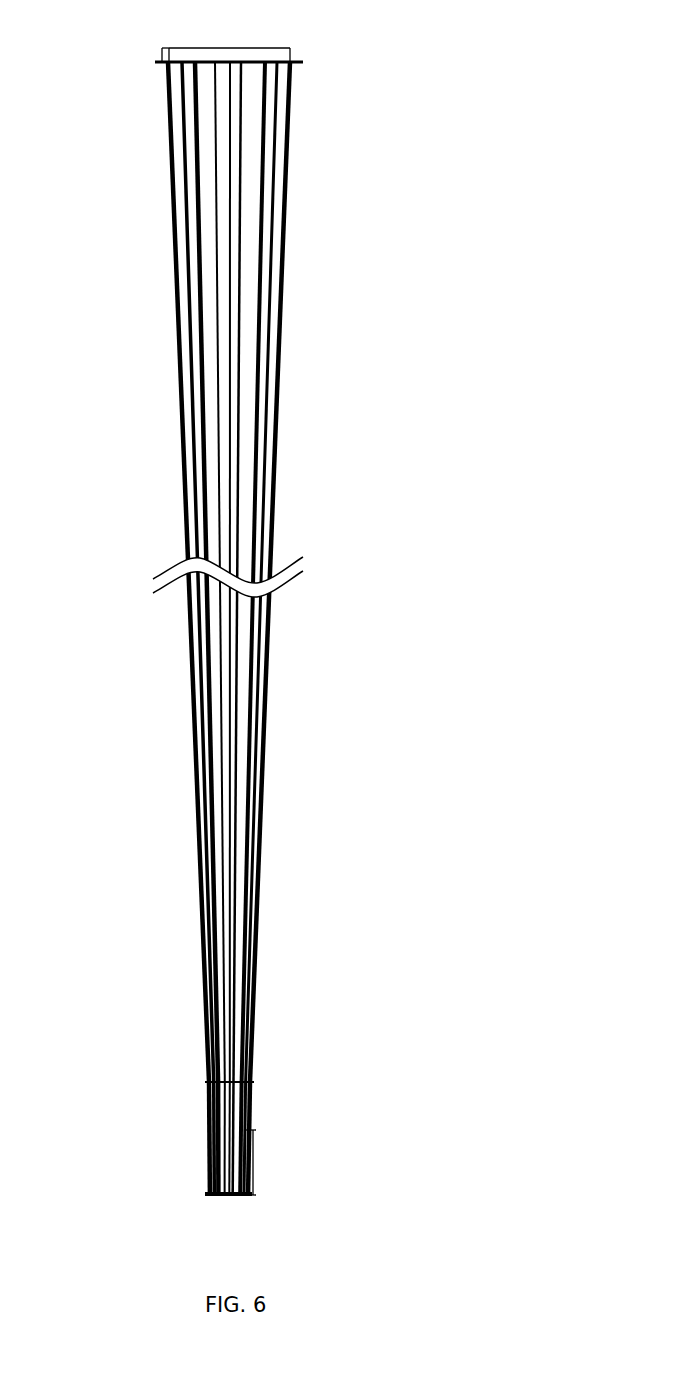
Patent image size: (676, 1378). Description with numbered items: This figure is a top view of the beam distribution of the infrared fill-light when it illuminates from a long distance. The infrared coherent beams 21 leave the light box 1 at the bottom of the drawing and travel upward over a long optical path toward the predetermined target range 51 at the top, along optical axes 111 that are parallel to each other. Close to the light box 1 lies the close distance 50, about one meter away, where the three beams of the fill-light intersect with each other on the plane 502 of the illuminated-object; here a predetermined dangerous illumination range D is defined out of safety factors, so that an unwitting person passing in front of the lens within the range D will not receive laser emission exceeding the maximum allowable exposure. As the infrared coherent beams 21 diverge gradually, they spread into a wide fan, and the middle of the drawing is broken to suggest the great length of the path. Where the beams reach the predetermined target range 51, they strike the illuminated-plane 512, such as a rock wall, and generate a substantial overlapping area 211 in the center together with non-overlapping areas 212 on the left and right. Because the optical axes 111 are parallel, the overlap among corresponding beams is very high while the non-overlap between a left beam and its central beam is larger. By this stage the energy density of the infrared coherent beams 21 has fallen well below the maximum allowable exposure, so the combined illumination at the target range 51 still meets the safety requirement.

The light box 1 is at (200, 1193).
The infrared coherent beam 21 is at (283, 298).
The close distance 50 is at (260, 1024).
The predetermined target range 51 is at (308, 598).
The optical axis 111 is at (213, 138).
The substantial overlapping area 211 is at (229, 48).
The non-overlapping area 212 is at (164, 48).
The plane of the illuminated-object 502 is at (204, 1082).
The illuminated-plane 512 is at (150, 66).
The predetermined dangerous illumination range D is at (262, 1162).